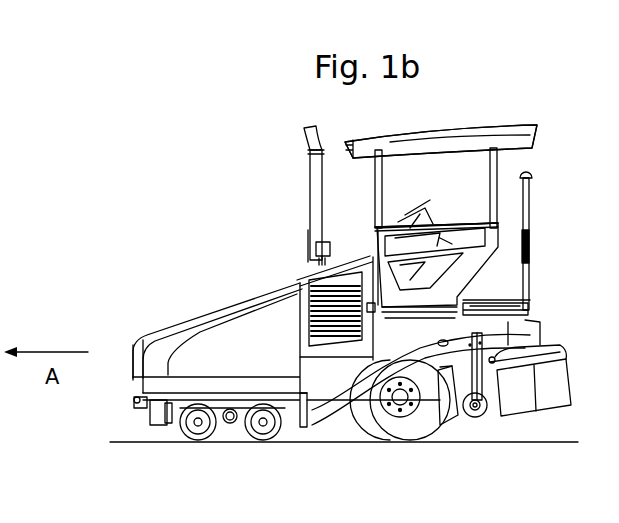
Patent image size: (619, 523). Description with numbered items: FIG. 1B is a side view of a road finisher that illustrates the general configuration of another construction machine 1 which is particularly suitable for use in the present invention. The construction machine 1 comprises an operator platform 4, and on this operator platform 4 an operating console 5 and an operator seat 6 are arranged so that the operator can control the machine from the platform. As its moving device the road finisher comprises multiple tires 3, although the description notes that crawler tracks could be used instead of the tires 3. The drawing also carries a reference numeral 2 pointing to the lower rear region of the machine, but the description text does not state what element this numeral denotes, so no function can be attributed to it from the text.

The construction machine 1 is at (212, 184).
The chassis 2 is at (447, 425).
The tires 3 is at (198, 422).
The operator platform 4 is at (532, 150).
The operating console 5 is at (377, 218).
The operator seat 6 is at (487, 222).